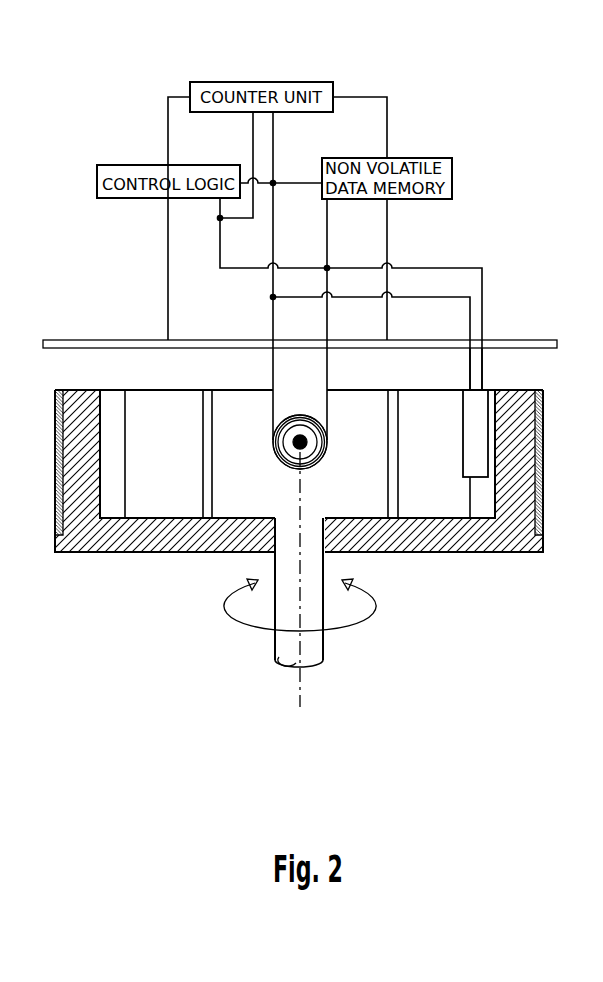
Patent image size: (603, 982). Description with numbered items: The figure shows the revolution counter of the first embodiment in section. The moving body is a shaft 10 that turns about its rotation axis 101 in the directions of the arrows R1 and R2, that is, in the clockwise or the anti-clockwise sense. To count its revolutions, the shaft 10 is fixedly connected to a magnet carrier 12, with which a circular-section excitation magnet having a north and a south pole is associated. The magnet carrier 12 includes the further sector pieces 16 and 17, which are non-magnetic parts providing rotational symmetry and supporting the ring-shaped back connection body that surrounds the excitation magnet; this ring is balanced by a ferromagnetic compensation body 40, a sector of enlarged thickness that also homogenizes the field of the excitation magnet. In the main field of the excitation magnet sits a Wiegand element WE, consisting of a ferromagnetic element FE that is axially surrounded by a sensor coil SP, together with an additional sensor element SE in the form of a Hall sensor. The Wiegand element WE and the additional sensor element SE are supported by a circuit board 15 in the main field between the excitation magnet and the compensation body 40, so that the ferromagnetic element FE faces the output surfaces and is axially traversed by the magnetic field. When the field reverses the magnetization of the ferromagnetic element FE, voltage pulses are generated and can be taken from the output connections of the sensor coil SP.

The shaft 10 is at (313, 653).
The rotation axis 101 is at (298, 607).
The magnet carrier 12 is at (117, 530).
The circuit board 15 is at (413, 343).
The part of the magnet carrier 16 is at (112, 425).
The part of the magnet carrier 17 is at (519, 406).
The ferromagnetic compensation body 40 is at (296, 398).
The ferromagnetic element FE is at (300, 438).
The sensor coil SP is at (280, 405).
The additional sensor element SE is at (478, 447).
The Wiegand element WE is at (328, 465).
The arrow R1 is at (246, 605).
The arrow R2 is at (354, 605).